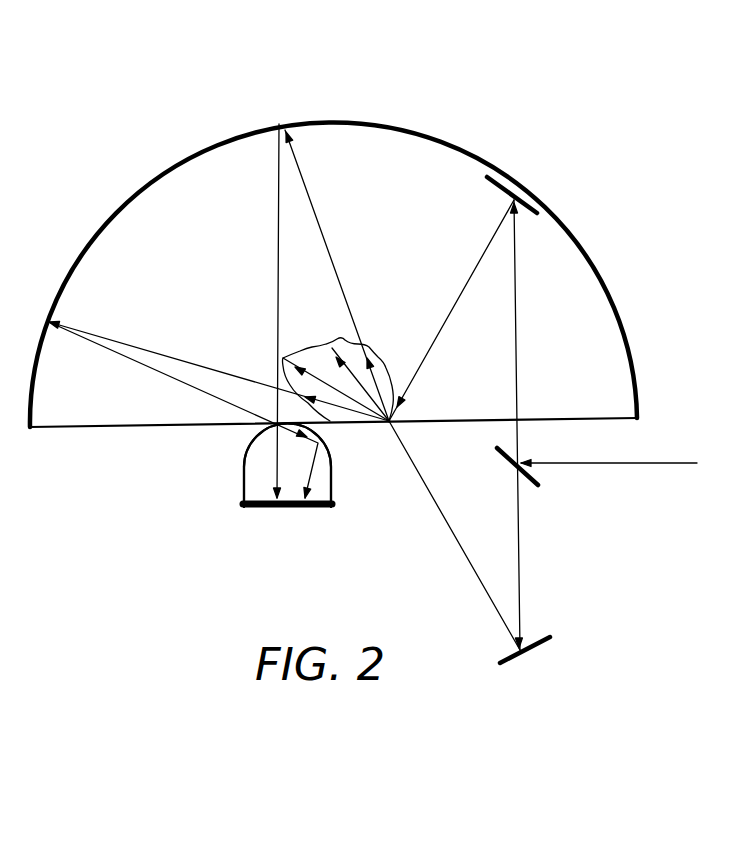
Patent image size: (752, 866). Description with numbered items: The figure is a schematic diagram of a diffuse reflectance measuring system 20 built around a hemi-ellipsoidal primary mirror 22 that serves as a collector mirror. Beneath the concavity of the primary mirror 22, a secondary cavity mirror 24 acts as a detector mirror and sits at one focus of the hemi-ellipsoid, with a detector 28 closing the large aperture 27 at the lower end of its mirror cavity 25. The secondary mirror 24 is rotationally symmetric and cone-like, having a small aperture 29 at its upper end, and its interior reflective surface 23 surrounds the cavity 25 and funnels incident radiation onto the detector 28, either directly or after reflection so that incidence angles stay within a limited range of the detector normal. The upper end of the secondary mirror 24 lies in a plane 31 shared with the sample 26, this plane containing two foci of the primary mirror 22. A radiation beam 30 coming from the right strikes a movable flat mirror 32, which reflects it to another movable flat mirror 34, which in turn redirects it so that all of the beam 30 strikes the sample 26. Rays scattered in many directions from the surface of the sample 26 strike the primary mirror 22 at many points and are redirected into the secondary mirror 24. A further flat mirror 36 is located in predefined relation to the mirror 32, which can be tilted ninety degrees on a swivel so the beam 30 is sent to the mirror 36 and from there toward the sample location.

The system 20 is at (496, 88).
The hemi-ellipsoidal primary mirror 22 is at (386, 124).
The interior reflective surface 23 is at (252, 449).
The secondary cavity mirror 24 is at (331, 475).
The mirror cavity 25 is at (252, 472).
The sample 26 is at (396, 424).
The large aperture 27 is at (262, 497).
The detector 28 is at (297, 510).
The small aperture 29 is at (289, 404).
The radiation beam 30 is at (666, 462).
The plane 31 is at (150, 423).
The movable flat mirror 32 is at (500, 452).
The movable flat mirror 34 is at (527, 215).
The flat mirror 36 is at (540, 650).